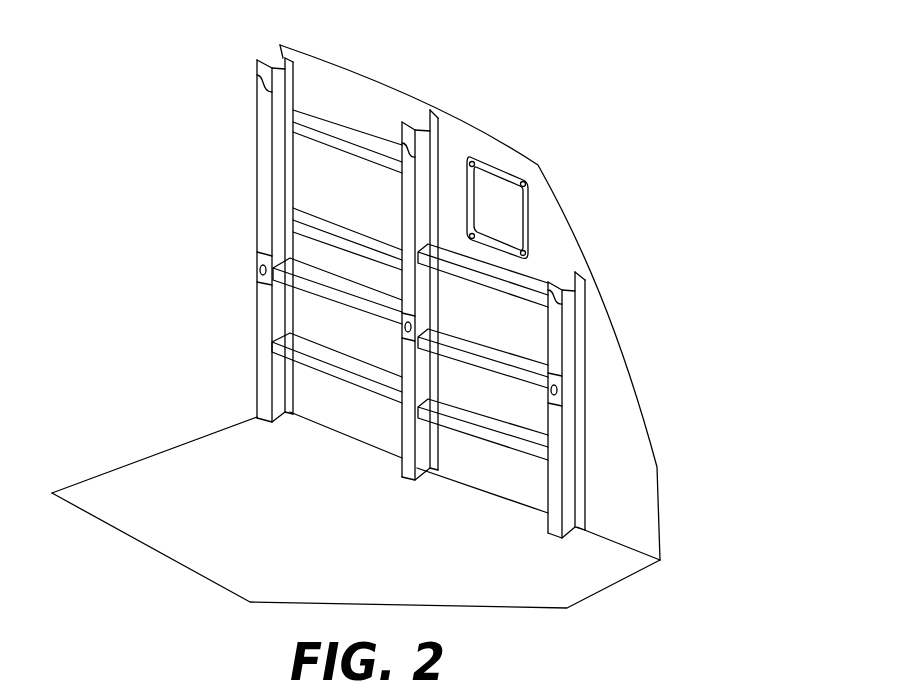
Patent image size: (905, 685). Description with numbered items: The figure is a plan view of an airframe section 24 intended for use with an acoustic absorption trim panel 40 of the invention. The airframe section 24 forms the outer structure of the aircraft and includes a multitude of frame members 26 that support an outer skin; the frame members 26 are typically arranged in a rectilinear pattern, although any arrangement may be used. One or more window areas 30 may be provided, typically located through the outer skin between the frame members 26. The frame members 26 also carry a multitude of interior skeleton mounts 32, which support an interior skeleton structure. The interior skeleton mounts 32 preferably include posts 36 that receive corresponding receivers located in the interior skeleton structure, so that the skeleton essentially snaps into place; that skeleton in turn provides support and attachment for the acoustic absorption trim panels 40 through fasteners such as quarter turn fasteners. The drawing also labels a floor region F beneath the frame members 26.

The airframe section 24 is at (479, 84).
The frame members 26 is at (279, 66).
The window areas 30 is at (514, 184).
The interior skeleton mounts 32 is at (258, 262).
The posts 36 is at (258, 277).
The acoustic absorption trim panels 40 is at (257, 135).
The floor F is at (217, 453).